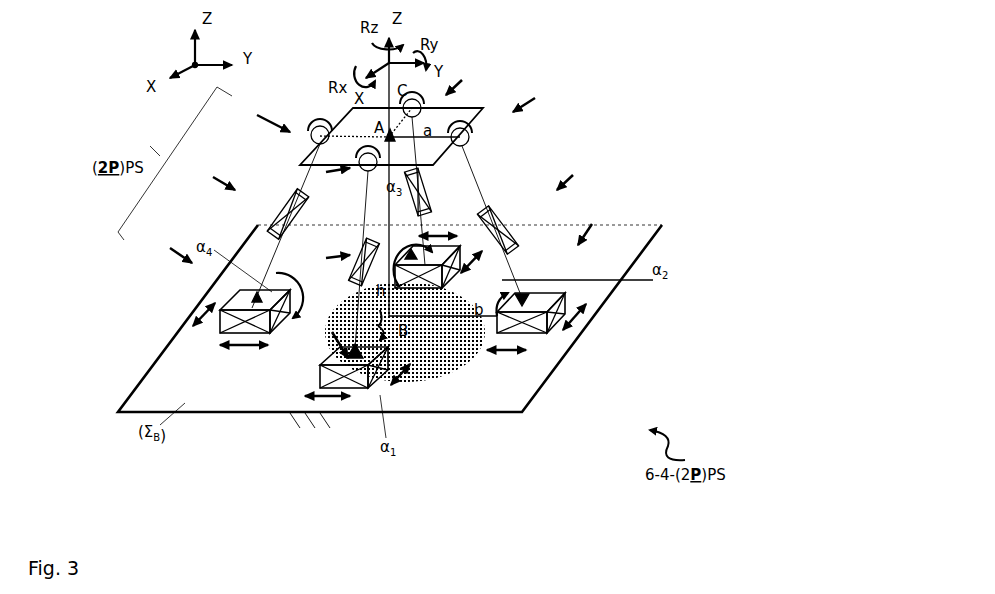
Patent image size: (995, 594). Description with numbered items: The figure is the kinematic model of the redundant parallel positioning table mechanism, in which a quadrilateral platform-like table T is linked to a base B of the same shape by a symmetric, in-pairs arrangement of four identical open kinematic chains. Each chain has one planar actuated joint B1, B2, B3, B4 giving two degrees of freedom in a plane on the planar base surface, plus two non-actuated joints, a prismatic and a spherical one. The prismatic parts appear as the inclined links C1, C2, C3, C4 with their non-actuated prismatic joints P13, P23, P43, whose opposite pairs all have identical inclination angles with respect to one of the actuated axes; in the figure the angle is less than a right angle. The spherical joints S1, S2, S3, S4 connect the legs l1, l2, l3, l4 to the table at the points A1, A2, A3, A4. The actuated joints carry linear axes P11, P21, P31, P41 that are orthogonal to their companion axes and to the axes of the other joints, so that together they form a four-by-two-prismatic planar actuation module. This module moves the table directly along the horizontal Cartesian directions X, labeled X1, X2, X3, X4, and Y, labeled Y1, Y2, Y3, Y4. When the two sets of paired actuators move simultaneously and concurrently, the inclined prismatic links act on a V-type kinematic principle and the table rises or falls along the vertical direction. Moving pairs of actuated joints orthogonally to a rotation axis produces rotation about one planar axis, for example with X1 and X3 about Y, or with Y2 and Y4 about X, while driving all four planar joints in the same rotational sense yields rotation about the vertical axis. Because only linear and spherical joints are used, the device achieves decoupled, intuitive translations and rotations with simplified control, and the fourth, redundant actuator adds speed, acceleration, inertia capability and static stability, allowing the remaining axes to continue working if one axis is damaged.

The platform-like table T is at (347, 113).
The base B is at (485, 418).
The spherical joint of the first chain A1 is at (361, 171).
The spherical joint of the second chain A2 is at (470, 134).
The spherical joint of the third chain A3 is at (420, 102).
The spherical joint of the fourth chain A4 is at (315, 125).
The planar actuated joint of the first chain B1 is at (350, 392).
The planar actuated joint of the second chain B2 is at (548, 334).
The planar actuated joint of the third chain B3 is at (426, 248).
The planar actuated joint of the fourth chain B4 is at (257, 318).
The inclined prismatic link of the first chain C1 is at (352, 272).
The inclined prismatic link of the second chain C2 is at (510, 218).
The inclined prismatic link of the third chain C3 is at (426, 194).
The inclined prismatic link of the fourth chain C4 is at (280, 205).
The leg of the first chain l1 is at (362, 213).
The leg of the second chain l2 is at (488, 183).
The leg of the third chain l3 is at (420, 191).
The leg of the fourth chain l4 is at (300, 180).
The spherical joint of the first chain S1 is at (334, 180).
The spherical joint of the second chain S2 is at (532, 95).
The spherical joint of the third chain S3 is at (463, 80).
The spherical joint of the fourth chain S4 is at (253, 116).
The non-actuated prismatic joint of the first chain P13 is at (327, 257).
The non-actuated prismatic joint of the second chain P23 is at (576, 176).
The non-actuated prismatic joint of the fourth chain P43 is at (209, 177).
The first actuated prismatic axis of the first chain P11 is at (318, 341).
The first actuated prismatic axis of the second chain P21 is at (610, 224).
The first actuated prismatic axis of the third chain P31 is at (430, 307).
The first actuated prismatic axis of the fourth chain P41 is at (162, 247).
The X-axis of the first actuated joint X1 is at (400, 386).
The X-axis of the second actuated joint X2 is at (563, 318).
The X-axis of the third actuated joint X3 is at (470, 268).
The X-axis of the fourth actuated joint X4 is at (200, 309).
The Y-axis of the first actuated joint Y1 is at (312, 402).
The Y-axis of the second actuated joint Y2 is at (520, 353).
The Y-axis of the third actuated joint Y3 is at (443, 228).
The Y-axis of the fourth actuated joint Y4 is at (215, 345).